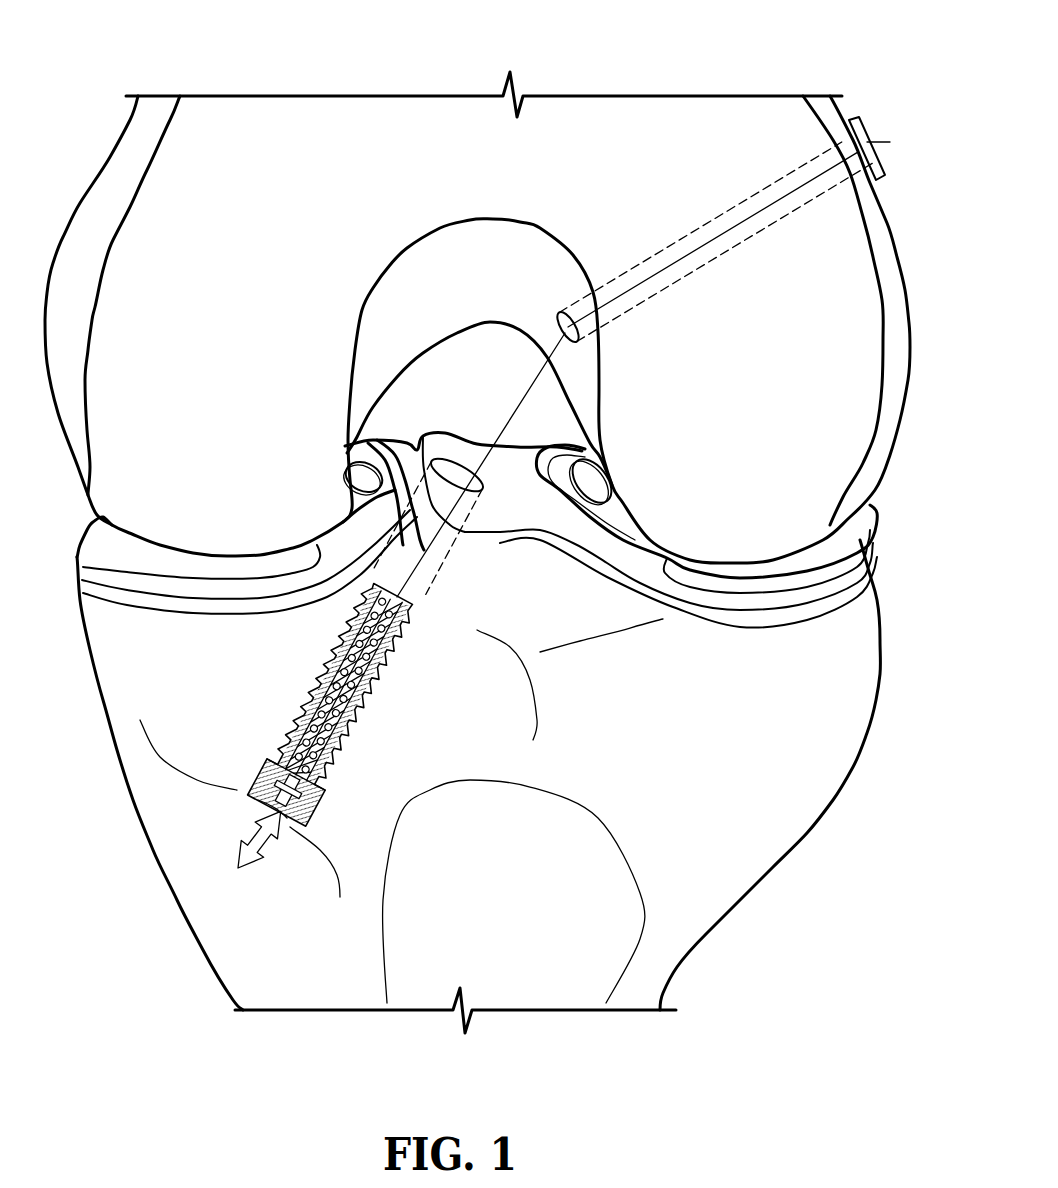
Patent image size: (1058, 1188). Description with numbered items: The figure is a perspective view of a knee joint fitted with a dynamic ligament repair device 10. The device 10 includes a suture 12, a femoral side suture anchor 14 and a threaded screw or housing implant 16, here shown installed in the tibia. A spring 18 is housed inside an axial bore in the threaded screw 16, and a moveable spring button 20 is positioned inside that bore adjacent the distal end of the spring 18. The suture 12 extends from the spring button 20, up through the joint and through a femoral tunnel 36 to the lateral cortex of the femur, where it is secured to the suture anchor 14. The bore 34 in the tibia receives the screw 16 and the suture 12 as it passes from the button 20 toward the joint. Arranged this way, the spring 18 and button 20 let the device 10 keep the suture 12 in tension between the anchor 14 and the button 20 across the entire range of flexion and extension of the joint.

The dynamic ligament repair device 10 is at (697, 73).
The suture 12 is at (520, 393).
The femoral side suture anchor 14 is at (877, 163).
The threaded screw 16 is at (383, 702).
The spring 18 is at (313, 687).
The moveable spring button 20 is at (263, 772).
The tibial bore 34 is at (447, 560).
The femoral tunnel 36 is at (728, 250).